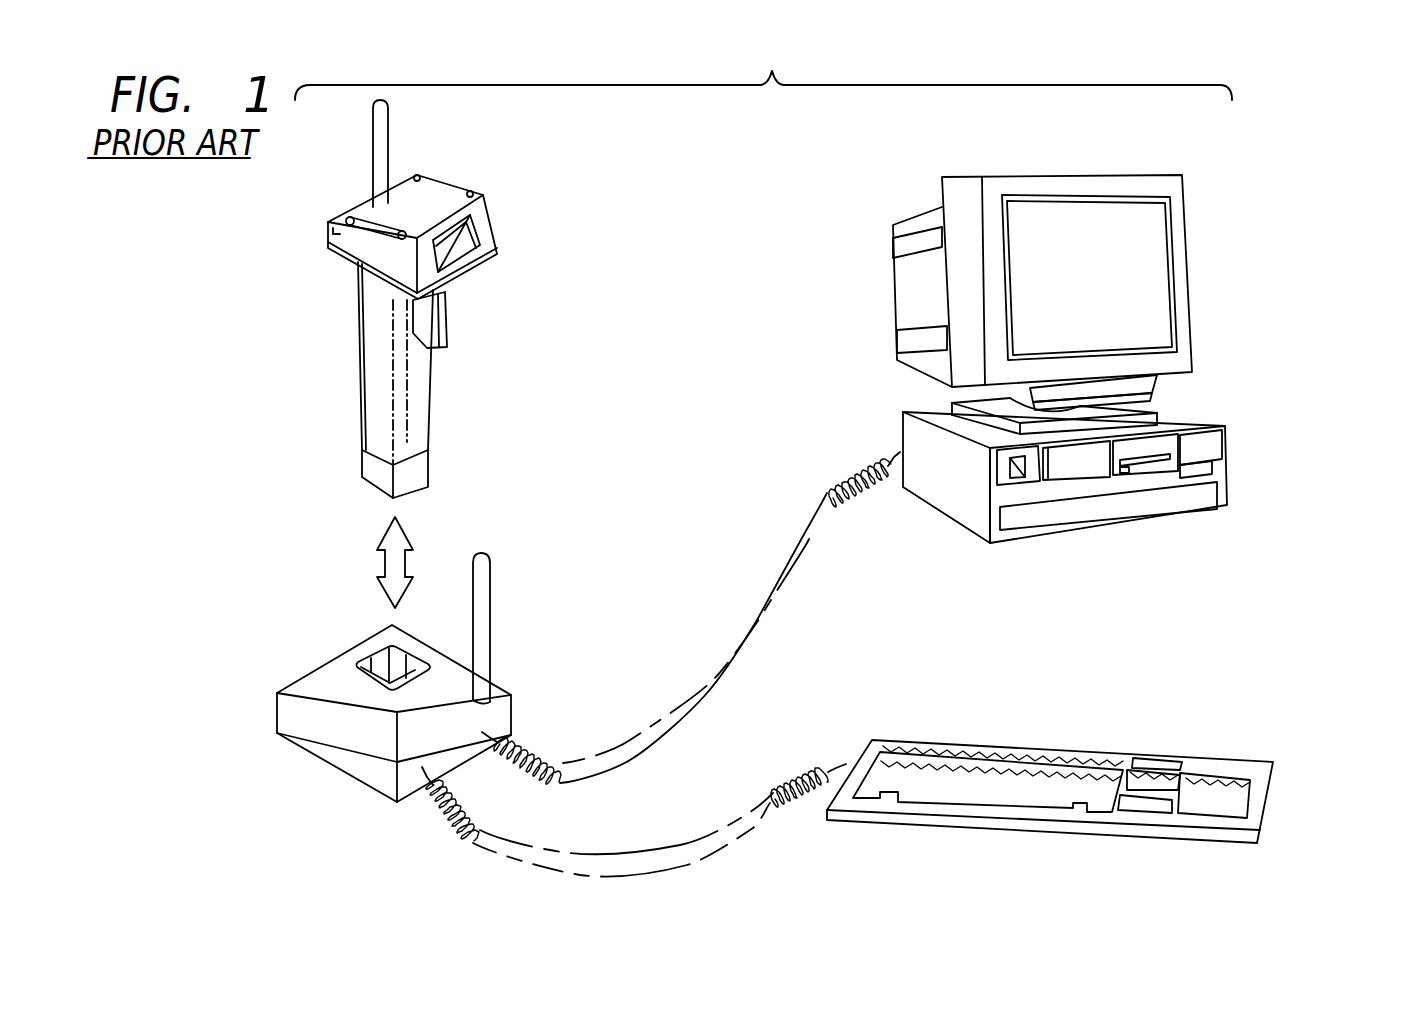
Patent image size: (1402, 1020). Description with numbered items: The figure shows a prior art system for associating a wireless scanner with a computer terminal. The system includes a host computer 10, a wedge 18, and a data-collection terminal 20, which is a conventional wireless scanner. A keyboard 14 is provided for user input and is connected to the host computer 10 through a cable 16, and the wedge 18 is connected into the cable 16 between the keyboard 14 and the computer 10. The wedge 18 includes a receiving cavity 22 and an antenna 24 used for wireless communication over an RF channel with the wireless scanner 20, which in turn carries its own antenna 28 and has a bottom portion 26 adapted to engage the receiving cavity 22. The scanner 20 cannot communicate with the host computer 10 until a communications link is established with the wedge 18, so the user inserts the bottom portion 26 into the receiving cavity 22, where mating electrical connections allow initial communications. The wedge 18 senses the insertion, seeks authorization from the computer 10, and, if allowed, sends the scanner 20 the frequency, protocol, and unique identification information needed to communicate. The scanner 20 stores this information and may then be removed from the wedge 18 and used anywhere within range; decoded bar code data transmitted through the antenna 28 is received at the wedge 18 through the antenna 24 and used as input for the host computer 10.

The host computer 10 is at (1240, 371).
The keyboard 14 is at (1270, 787).
The cable 16 is at (777, 606).
The wedge 18 is at (297, 735).
The data-collection terminal 20 is at (358, 335).
The receiving cavity 22 is at (377, 665).
The antenna 24 is at (492, 602).
The bottom portion 26 is at (362, 455).
The antenna 28 is at (375, 139).